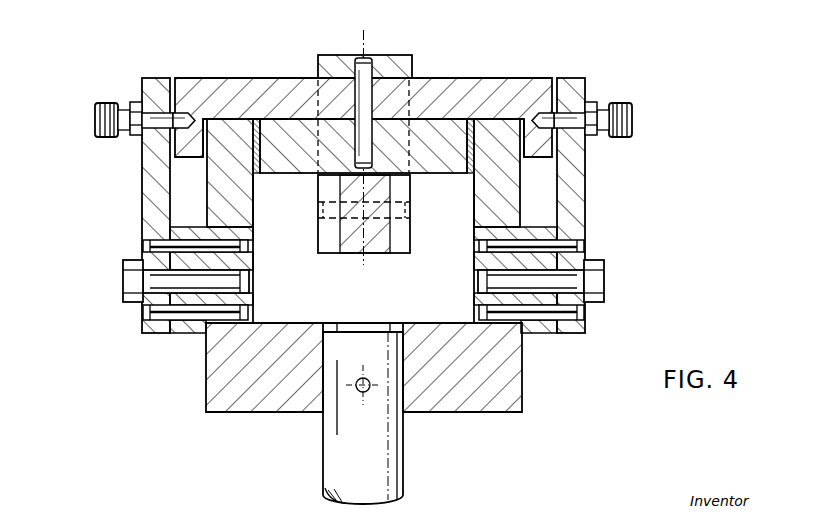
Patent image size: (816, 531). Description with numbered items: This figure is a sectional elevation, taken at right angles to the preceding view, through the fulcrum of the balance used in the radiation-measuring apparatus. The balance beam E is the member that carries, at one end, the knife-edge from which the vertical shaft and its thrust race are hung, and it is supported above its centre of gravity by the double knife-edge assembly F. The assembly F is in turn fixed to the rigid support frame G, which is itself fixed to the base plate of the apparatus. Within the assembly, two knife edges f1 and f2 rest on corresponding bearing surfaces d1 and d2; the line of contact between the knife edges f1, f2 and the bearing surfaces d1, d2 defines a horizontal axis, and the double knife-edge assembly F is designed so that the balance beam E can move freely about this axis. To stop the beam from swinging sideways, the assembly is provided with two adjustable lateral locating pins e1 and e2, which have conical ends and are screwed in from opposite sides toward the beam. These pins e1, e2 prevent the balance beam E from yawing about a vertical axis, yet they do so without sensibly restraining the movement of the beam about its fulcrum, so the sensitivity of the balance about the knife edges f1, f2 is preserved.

The lateral locating pin e1 is at (96, 115).
The lateral locating pin e2 is at (632, 118).
The knife edge f1 is at (216, 110).
The knife edge f2 is at (513, 106).
The bearing surface d1 is at (232, 126).
The bearing surface d2 is at (503, 130).
The balance beam E is at (352, 247).
The double knife-edge assembly F is at (473, 404).
The rigid support frame G is at (400, 483).